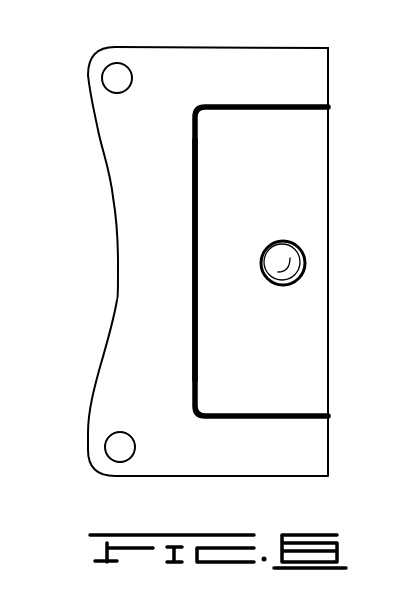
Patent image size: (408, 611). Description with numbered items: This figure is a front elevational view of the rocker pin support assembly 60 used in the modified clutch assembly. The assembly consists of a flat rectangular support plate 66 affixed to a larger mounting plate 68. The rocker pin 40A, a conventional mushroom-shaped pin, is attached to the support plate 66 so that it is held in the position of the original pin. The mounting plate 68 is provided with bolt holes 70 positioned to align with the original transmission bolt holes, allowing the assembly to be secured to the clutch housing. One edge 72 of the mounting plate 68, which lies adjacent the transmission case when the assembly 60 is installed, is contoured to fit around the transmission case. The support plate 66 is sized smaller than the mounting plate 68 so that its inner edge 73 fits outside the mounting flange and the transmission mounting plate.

The rocker pin support assembly 60 is at (195, 259).
The support plate 66 is at (292, 187).
The mounting plate 68 is at (304, 85).
The bolt holes 70 is at (110, 76).
The edge 72 is at (117, 263).
The inner edge 73 is at (193, 330).
The rocker pin 40A is at (303, 243).